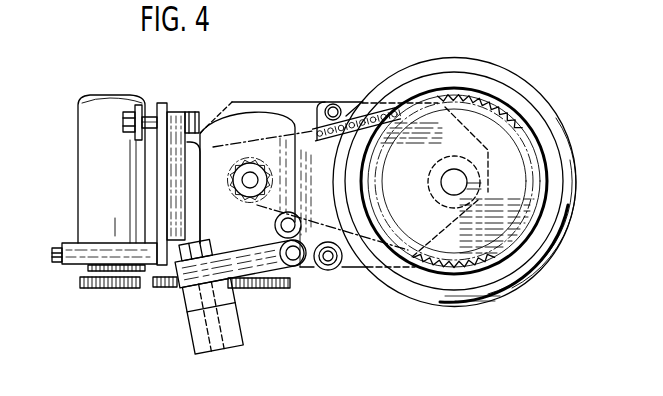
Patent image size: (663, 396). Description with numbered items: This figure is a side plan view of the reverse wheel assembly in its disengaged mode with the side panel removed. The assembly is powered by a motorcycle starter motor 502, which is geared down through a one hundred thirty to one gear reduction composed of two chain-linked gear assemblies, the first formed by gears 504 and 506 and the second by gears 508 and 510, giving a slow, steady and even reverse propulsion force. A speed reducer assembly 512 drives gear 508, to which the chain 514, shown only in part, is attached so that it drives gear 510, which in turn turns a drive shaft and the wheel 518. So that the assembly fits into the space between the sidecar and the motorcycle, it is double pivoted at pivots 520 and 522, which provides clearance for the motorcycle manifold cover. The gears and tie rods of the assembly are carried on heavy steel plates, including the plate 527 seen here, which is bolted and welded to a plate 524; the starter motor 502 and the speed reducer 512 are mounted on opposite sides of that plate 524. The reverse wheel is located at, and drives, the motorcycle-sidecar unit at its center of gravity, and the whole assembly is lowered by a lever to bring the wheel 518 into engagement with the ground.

The starter motor 502 is at (78, 181).
The gear 504 is at (127, 290).
The gear 506 is at (283, 291).
The gear 508 is at (236, 186).
The gear 510 is at (440, 262).
The speed reducer assembly 512 is at (234, 128).
The chain 514 is at (333, 87).
The wheel 518 is at (532, 85).
The pivot 520 is at (297, 268).
The pivot 522 is at (334, 271).
The plate 524 is at (164, 103).
The plate 527 is at (274, 107).